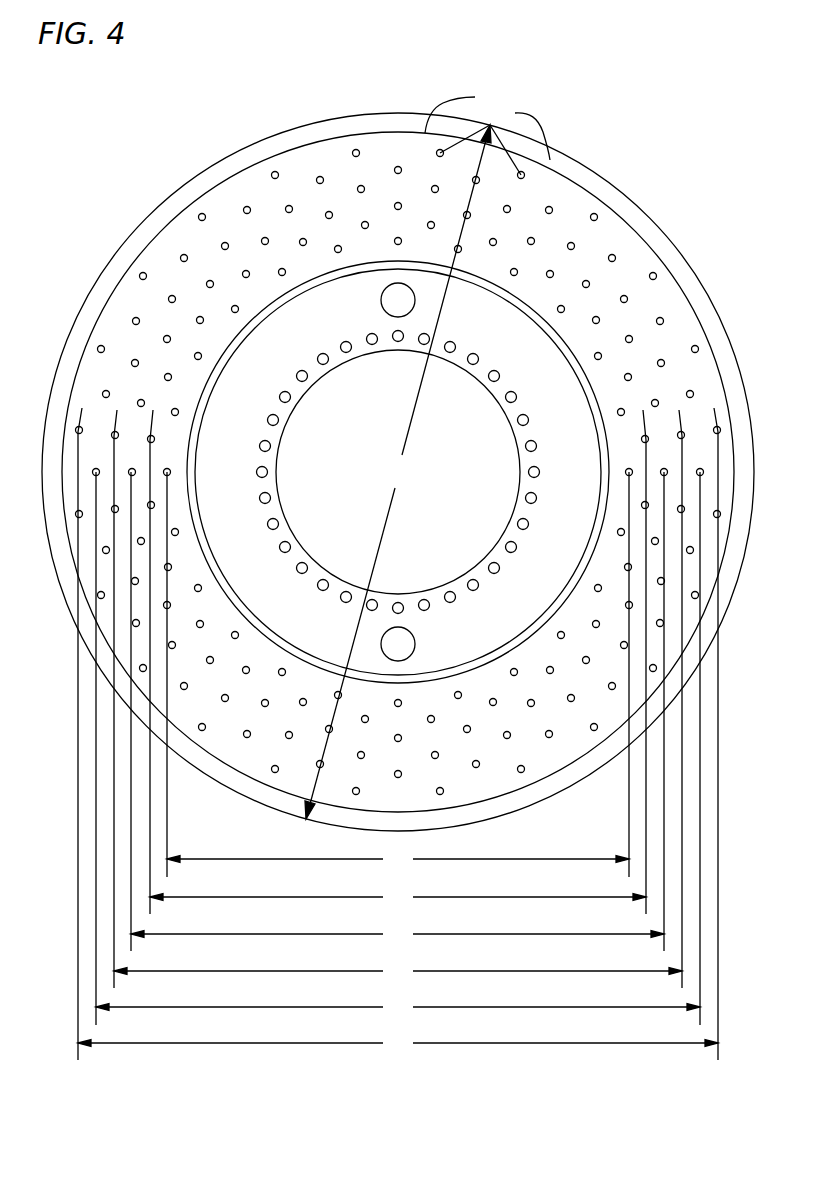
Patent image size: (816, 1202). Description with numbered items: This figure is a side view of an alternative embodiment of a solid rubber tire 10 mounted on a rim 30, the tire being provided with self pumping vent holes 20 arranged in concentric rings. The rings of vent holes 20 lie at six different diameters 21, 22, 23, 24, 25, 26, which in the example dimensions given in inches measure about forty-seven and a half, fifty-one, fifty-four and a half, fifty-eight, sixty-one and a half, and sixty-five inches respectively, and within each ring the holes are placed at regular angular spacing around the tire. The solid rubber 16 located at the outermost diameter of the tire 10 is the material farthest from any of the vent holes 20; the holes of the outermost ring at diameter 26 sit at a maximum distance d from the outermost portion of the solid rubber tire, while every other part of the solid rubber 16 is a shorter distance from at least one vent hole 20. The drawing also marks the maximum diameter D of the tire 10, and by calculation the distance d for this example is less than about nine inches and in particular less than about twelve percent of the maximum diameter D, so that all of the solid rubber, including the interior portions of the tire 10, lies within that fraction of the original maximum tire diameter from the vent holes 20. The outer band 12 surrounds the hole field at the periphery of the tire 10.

The tire 10 is at (163, 98).
The outer rim 12 is at (576, 198).
The solid rubber 16 is at (245, 185).
The self pumping vent holes 20 is at (351, 134).
The rim 30 is at (219, 362).
The maximum diameter of the tire D is at (398, 472).
The maximum distance d is at (496, 125).
The first ring diameter 21 is at (398, 674).
The second ring diameter 22 is at (398, 662).
The third ring diameter 23 is at (397, 711).
The fourth ring diameter 24 is at (398, 699).
The fifth ring diameter 25 is at (398, 748).
The sixth ring diameter 26 is at (398, 734).